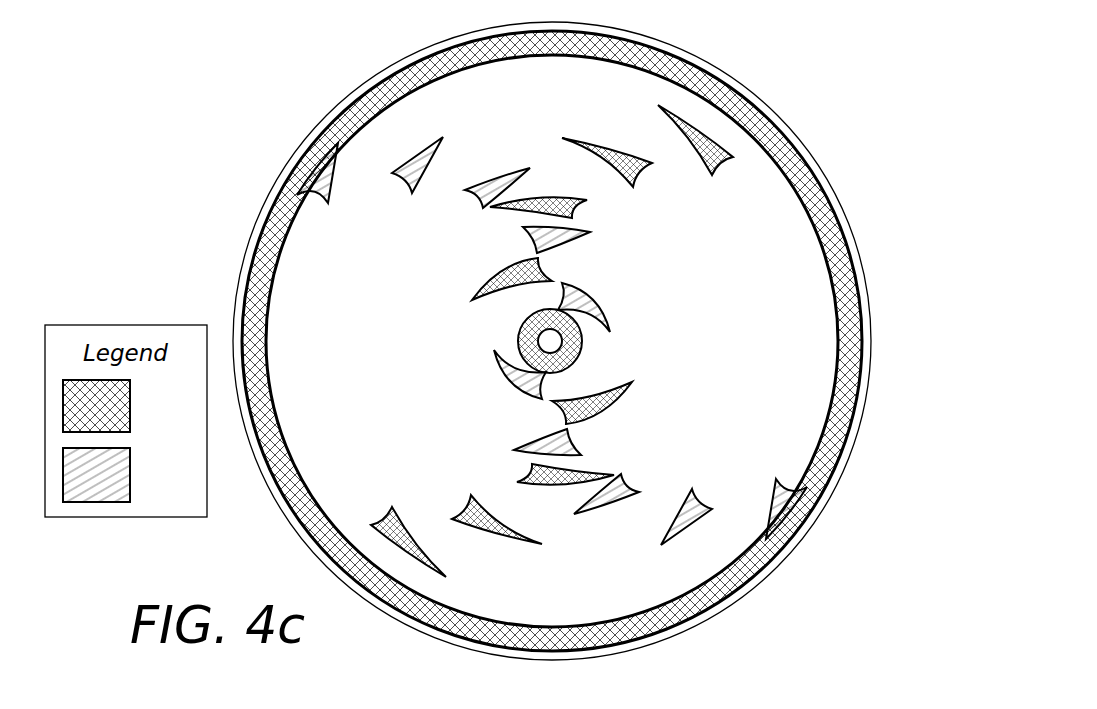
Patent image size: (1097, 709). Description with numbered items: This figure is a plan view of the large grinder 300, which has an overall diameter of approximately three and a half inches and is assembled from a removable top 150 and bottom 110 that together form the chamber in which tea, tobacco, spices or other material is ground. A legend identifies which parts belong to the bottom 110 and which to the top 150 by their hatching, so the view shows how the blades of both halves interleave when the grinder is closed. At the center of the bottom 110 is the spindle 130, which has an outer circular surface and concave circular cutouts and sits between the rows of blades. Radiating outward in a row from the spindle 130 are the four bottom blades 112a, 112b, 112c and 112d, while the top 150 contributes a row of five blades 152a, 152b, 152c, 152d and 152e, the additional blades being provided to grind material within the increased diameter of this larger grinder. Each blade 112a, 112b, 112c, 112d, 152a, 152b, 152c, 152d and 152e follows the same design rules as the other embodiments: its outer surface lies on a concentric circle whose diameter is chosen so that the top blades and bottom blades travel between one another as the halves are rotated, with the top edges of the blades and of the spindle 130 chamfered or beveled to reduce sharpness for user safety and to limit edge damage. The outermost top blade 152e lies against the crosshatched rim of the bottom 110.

The large grinder 300 is at (846, 110).
The bottom 110 is at (467, 341).
The top 150 is at (435, 463).
The spindle 130 is at (585, 337).
The blade 112a is at (482, 292).
The blade 112b is at (566, 209).
The blade 112c is at (615, 157).
The blade 112d is at (716, 150).
The blade 152a is at (590, 303).
The blade 152b is at (540, 248).
The blade 152c is at (495, 185).
The blade 152d is at (405, 176).
The blade 152e is at (322, 172).